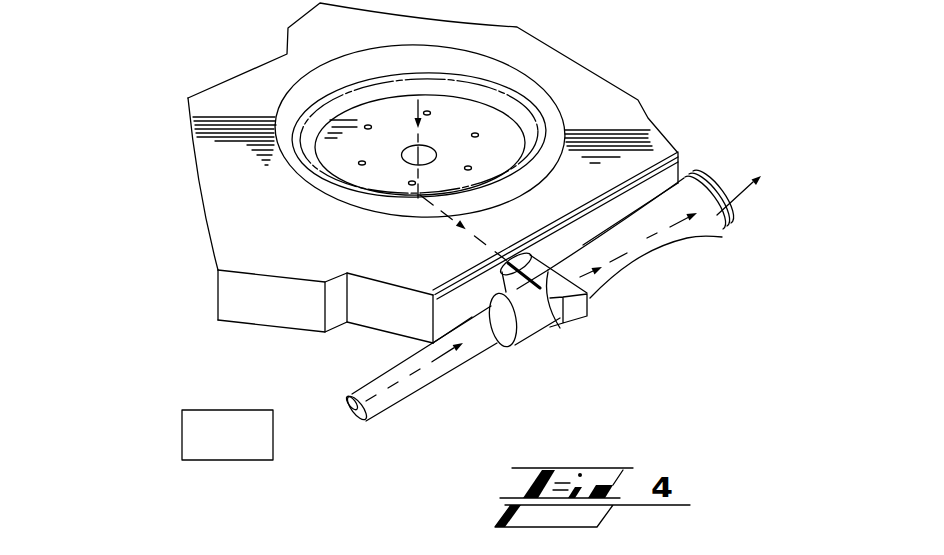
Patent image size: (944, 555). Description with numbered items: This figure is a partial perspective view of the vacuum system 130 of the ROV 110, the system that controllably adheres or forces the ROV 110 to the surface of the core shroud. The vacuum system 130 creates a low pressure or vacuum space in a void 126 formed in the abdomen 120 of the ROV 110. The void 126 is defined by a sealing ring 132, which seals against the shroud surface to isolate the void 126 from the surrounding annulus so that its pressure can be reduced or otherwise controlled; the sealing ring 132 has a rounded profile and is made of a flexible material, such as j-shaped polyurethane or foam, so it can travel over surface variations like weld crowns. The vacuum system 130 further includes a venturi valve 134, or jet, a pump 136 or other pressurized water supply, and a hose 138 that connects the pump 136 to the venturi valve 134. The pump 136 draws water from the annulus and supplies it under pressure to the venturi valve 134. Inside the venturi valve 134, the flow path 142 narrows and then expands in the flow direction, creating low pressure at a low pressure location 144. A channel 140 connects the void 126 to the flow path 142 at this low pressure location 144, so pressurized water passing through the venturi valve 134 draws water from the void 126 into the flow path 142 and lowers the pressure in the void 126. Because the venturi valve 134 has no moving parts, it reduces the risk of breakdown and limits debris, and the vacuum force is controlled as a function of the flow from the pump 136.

The ROV 110 is at (127, 125).
The abdomen 120 is at (587, 107).
The void 126 is at (350, 113).
The vacuum system 130 is at (788, 366).
The sealing ring 132 is at (508, 73).
The venturi valve 134 is at (600, 322).
The pump 136 is at (350, 402).
The hose 138 is at (416, 410).
The channel 140 is at (438, 208).
The flow path 142 is at (657, 237).
The low pressure location 144 is at (565, 282).